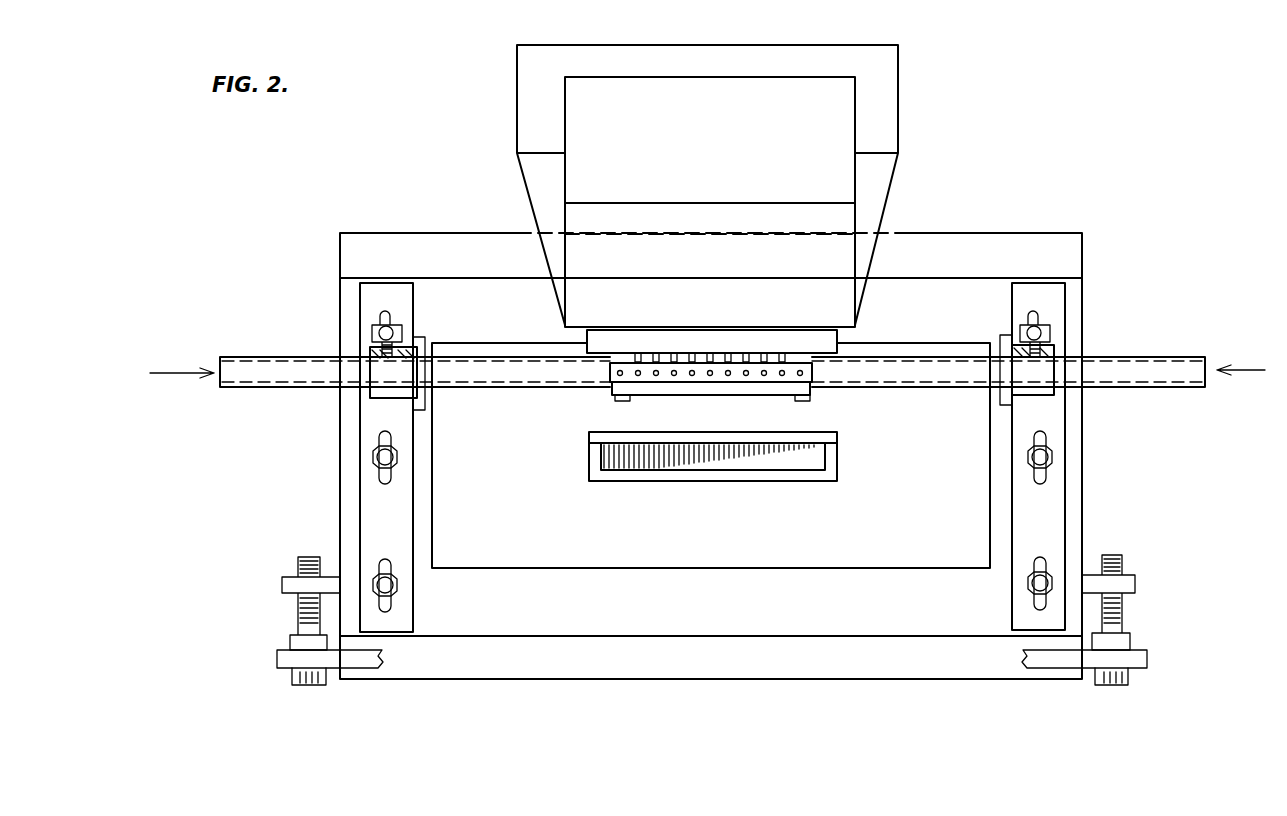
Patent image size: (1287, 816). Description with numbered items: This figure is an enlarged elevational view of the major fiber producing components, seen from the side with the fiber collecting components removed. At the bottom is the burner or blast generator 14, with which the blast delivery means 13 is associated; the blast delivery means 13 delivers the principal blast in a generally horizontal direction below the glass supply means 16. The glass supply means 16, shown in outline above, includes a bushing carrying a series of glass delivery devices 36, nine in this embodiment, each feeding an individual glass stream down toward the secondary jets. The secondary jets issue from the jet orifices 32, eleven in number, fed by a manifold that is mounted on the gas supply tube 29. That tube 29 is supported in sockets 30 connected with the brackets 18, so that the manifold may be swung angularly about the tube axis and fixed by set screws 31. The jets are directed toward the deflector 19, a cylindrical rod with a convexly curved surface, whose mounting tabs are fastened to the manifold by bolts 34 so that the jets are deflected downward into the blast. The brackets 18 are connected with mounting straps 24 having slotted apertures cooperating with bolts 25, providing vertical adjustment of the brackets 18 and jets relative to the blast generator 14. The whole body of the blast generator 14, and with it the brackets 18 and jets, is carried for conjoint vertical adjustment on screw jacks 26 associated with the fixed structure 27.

The blast delivery means 13 is at (720, 470).
The blast generator 14 is at (750, 625).
The glass supply means 16 is at (905, 97).
The brackets 18 is at (1004, 398).
The deflector 19 is at (703, 383).
The mounting straps 24 is at (1057, 516).
The bolts 25 is at (1026, 584).
The screw jacks 26 is at (1122, 612).
The fixed structure 27 is at (1148, 665).
The gas supply tube 29 is at (1162, 356).
The sockets 30 is at (1052, 385).
The set screws 31 is at (1028, 330).
The jet orifices 32 is at (782, 376).
The bolts 34 is at (808, 400).
The glass delivery devices 36 is at (783, 353).